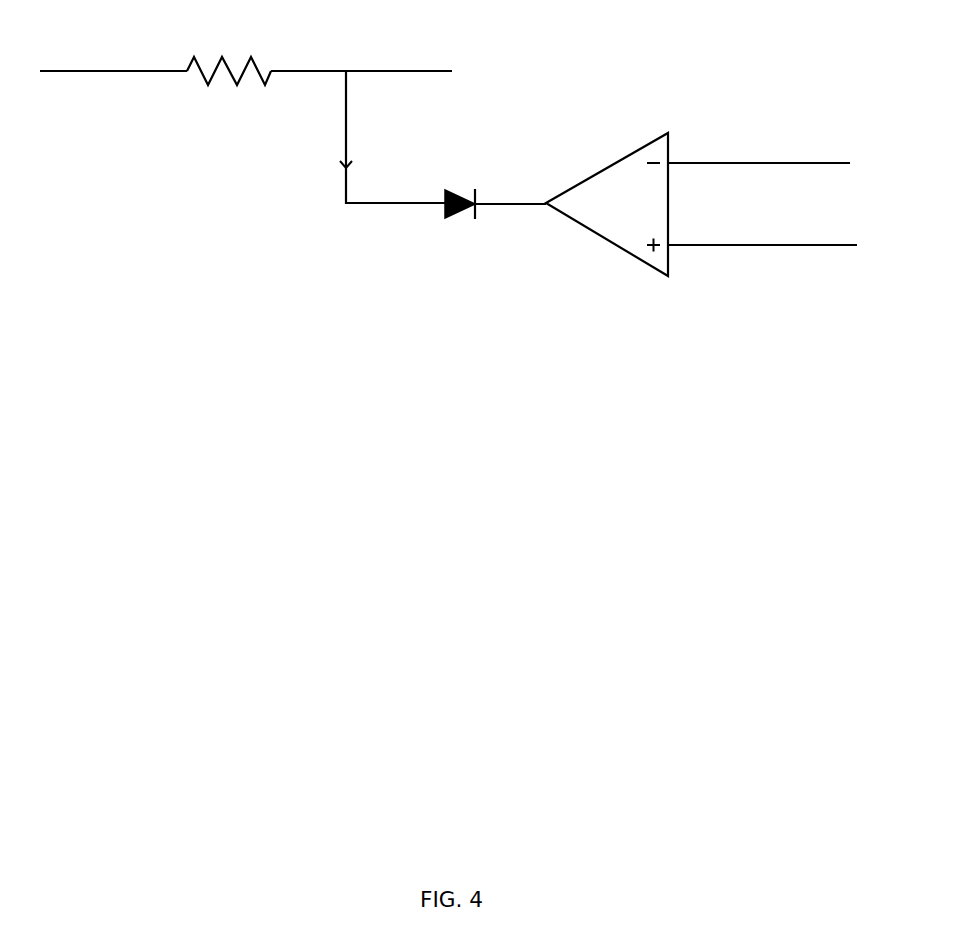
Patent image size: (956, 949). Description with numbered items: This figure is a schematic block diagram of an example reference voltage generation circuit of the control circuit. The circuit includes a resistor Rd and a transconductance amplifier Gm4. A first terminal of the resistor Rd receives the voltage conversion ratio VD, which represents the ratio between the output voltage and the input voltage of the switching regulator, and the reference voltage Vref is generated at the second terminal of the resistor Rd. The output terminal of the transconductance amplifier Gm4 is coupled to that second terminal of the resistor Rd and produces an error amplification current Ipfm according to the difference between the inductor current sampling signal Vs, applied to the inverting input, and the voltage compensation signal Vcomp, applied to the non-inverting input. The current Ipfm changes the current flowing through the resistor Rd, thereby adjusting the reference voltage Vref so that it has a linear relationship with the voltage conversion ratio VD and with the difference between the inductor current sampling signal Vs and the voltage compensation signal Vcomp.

The voltage conversion ratio VD is at (113, 53).
The resistor Rd is at (229, 48).
The reference voltage Vref is at (361, 52).
The error amplification current Ipfm is at (357, 137).
The transconductance amplifier Gm4 is at (607, 204).
The inductor current sampling signal Vs is at (759, 148).
The voltage compensation signal Vcomp is at (762, 228).